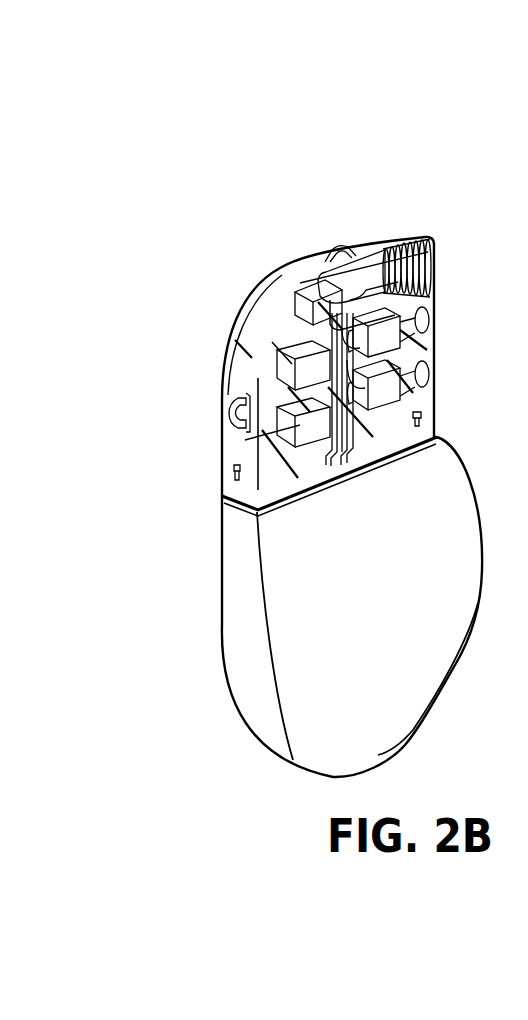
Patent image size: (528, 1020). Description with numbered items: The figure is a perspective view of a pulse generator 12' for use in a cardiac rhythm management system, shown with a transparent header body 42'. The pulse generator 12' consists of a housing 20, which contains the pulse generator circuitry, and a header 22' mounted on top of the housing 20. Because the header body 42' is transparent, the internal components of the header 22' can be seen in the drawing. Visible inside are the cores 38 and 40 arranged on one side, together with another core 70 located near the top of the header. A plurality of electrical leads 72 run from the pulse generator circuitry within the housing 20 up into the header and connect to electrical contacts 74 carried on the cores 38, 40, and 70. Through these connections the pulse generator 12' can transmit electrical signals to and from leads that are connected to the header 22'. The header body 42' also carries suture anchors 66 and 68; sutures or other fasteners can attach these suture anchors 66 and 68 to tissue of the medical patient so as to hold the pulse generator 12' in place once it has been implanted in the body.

The pulse generator 12' is at (281, 130).
The housing 20 is at (229, 690).
The header 22' is at (291, 344).
The header body 42' is at (217, 329).
The suture anchor 68 is at (332, 262).
The electrical contacts 74 is at (335, 293).
The core 70 is at (420, 273).
The electrical leads 72 is at (300, 367).
The core 40 is at (400, 341).
The core 38 is at (410, 406).
The suture anchor 66 is at (230, 407).